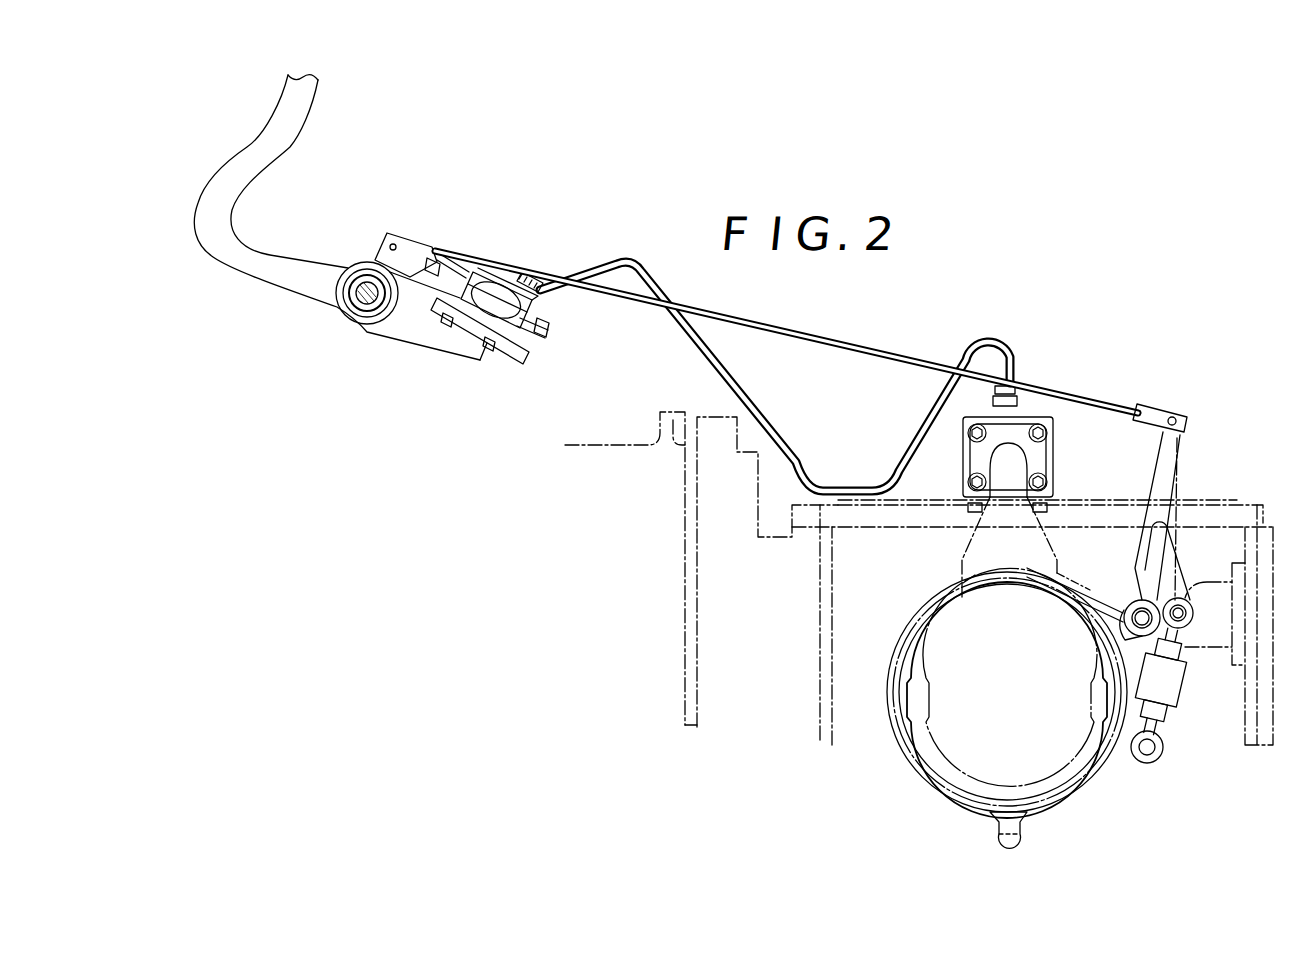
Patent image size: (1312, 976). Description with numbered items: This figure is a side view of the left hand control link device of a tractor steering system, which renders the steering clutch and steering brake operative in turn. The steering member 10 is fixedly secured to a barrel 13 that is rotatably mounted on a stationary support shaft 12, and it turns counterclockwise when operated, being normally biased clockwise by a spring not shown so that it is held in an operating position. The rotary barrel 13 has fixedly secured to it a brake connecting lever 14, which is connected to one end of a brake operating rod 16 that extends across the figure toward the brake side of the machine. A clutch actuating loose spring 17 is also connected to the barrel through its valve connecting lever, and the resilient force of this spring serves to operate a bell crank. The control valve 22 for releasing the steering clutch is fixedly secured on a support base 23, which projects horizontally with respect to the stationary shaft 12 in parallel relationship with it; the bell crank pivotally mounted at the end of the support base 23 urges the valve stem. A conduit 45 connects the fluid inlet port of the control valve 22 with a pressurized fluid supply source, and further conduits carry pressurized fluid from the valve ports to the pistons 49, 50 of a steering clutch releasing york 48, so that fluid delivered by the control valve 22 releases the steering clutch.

The steering member 10 is at (282, 143).
The stationary support shaft 12 is at (365, 304).
The barrel 13 is at (357, 303).
The brake connecting lever 14 is at (380, 260).
The conduit 45 is at (354, 230).
The brake operating rod 16 is at (715, 318).
The loose spring 17 is at (547, 313).
The control valve 22 is at (497, 273).
The support base 23 is at (427, 332).
The steering clutch releasing york 48 is at (1053, 563).
The piston 49 is at (1050, 458).
The piston 50 is at (1040, 457).